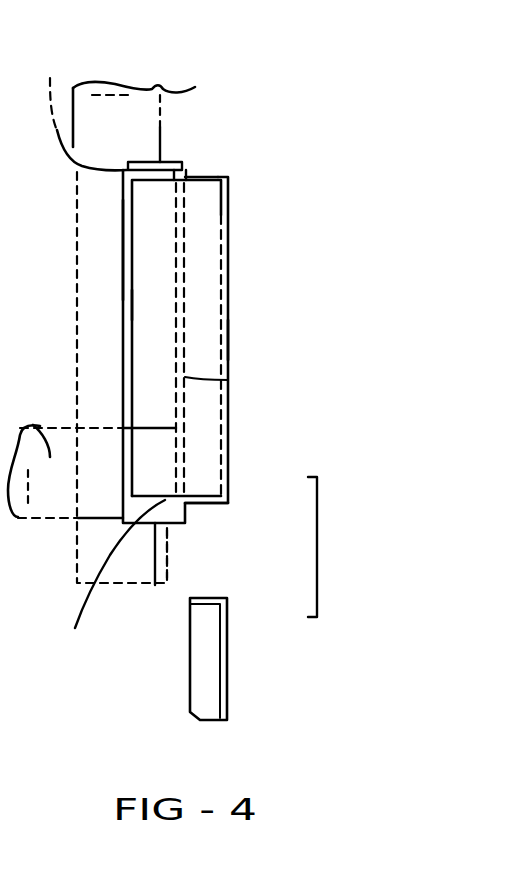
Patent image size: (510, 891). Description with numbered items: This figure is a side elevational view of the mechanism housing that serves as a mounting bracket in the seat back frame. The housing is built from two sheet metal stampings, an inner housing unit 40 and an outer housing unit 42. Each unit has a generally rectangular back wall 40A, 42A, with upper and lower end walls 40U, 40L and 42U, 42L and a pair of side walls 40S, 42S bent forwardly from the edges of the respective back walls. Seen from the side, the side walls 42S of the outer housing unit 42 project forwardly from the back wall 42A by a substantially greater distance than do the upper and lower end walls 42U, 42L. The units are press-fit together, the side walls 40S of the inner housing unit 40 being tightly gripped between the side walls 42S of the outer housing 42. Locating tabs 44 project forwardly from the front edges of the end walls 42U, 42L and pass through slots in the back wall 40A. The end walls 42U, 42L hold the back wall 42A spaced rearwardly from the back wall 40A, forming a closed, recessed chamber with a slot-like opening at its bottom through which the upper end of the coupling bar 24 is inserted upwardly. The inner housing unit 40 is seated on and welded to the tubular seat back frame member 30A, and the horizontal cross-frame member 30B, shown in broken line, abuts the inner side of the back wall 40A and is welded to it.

The coupling bar 24 is at (227, 682).
The frame member 30A is at (195, 87).
The horizontal lower cross-frame member 30B is at (35, 425).
The inner housing unit 40 is at (180, 167).
The upper end wall 40U is at (137, 161).
The lower end wall 40L is at (155, 585).
The side walls 40S is at (123, 252).
The back wall 40A is at (228, 380).
The outer housing unit 42 is at (230, 297).
The upper end wall 42U is at (200, 180).
The lower end wall 42L is at (228, 503).
The back wall 42A is at (230, 343).
The side walls 42S is at (152, 311).
The locating tabs 44 is at (65, 682).